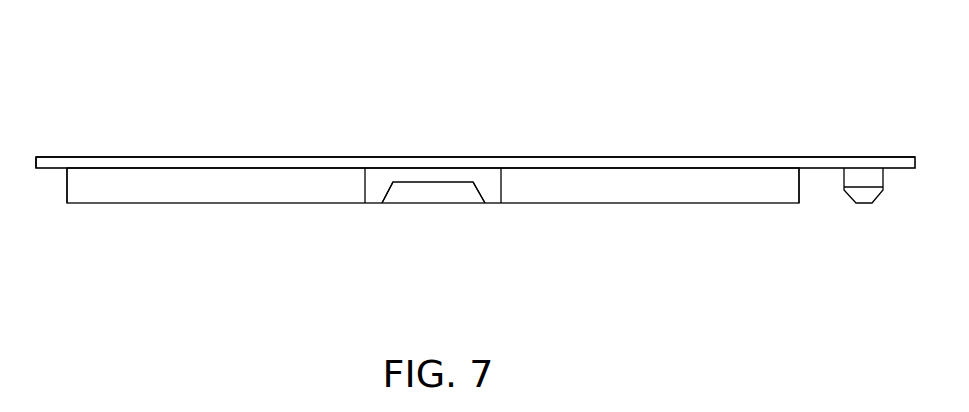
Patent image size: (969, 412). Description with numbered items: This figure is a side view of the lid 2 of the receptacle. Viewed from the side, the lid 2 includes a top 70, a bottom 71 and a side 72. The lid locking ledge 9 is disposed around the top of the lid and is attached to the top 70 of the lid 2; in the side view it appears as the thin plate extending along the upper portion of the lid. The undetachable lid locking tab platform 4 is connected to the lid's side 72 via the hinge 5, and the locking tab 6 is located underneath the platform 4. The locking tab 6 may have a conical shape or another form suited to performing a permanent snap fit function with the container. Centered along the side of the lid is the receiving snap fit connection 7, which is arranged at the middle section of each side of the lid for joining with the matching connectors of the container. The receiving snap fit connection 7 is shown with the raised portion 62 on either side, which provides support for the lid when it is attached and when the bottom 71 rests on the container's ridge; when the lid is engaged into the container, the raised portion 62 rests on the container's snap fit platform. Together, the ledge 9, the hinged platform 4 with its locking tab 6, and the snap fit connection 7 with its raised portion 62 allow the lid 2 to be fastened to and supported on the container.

The lid 2 is at (617, 90).
The undetachable lid locking tab platform 4 is at (903, 157).
The hinge 5 is at (798, 157).
The locking tab 6 is at (884, 180).
The receiving snap fit cylinder 7 is at (436, 197).
The lid locking ledge 9 is at (52, 157).
The raised portion 62 is at (373, 204).
The top 70 is at (330, 157).
The bottom 71 is at (272, 204).
The side 72 is at (67, 190).